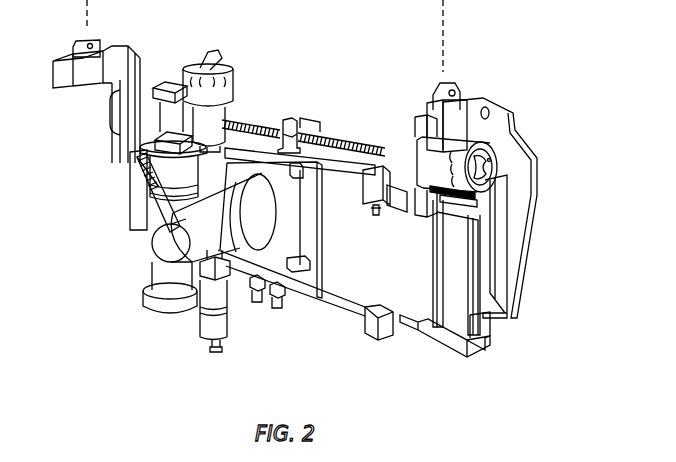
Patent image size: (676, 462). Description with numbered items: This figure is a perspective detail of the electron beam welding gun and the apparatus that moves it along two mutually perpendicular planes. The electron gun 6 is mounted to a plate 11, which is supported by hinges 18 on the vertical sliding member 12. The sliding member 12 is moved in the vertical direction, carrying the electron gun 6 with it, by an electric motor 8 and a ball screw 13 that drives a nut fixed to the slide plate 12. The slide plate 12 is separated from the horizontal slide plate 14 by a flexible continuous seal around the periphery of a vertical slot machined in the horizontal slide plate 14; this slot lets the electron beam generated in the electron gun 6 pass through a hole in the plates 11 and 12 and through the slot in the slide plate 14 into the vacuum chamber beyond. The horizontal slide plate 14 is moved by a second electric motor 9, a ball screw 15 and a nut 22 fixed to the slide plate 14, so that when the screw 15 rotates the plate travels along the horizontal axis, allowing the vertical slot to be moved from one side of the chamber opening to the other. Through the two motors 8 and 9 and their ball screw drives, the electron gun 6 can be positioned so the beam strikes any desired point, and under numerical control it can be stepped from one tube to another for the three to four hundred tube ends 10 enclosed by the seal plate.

The electron gun 6 is at (253, 233).
The electric motor 8 is at (233, 65).
The electric motor 9 is at (512, 133).
The tube ends 10 is at (96, 101).
The plate 11 is at (285, 250).
The vertical sliding member 12 is at (313, 275).
The ball screw 13 is at (250, 118).
The horizontal slide plate 14 is at (402, 313).
The ball screw 15 is at (322, 124).
The hinges 18 is at (362, 124).
The nut 22 is at (283, 118).